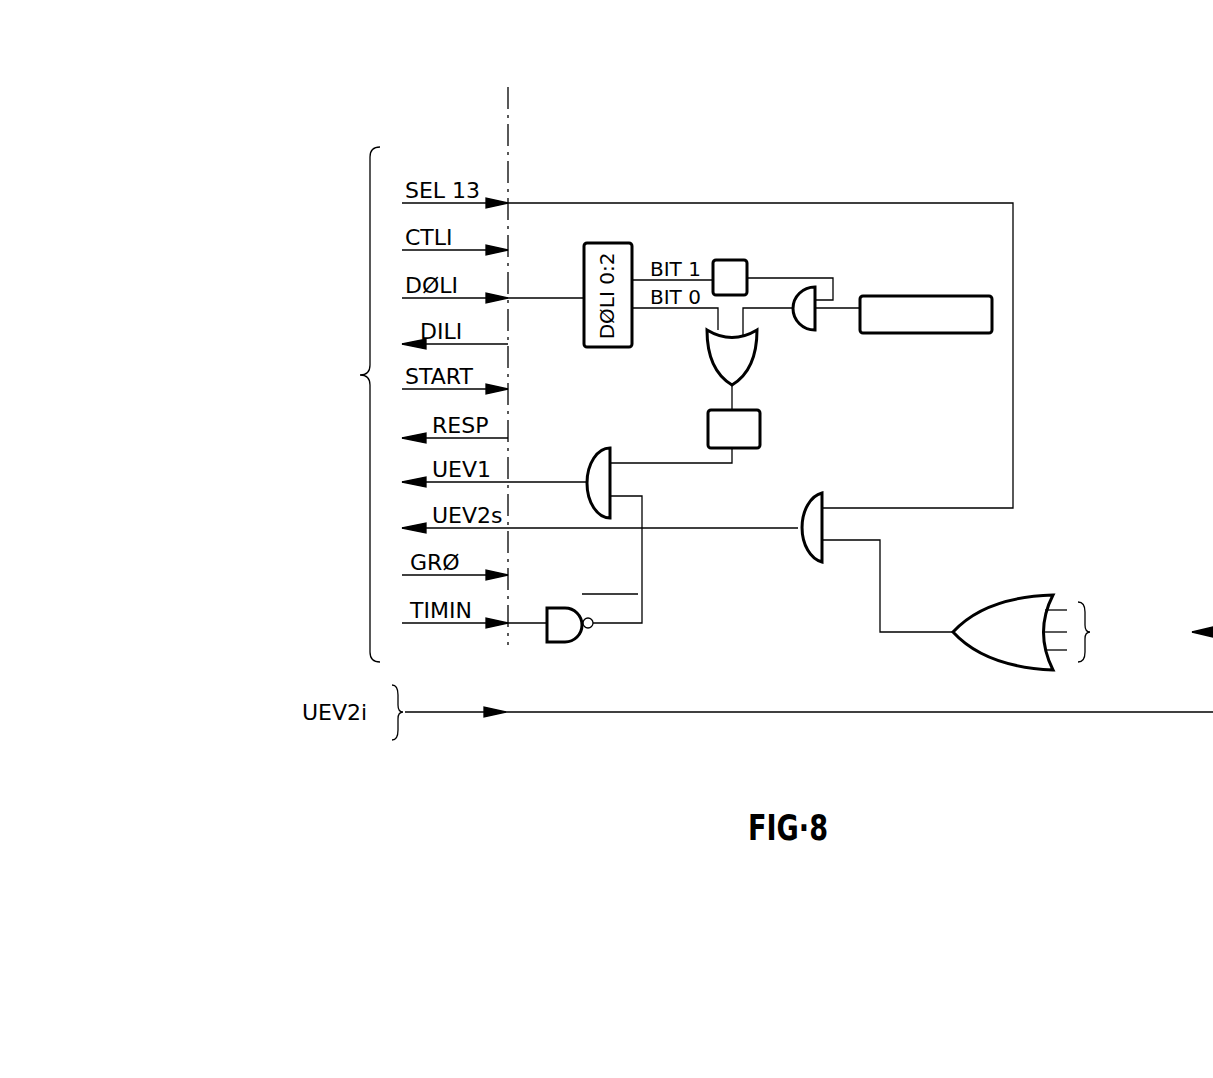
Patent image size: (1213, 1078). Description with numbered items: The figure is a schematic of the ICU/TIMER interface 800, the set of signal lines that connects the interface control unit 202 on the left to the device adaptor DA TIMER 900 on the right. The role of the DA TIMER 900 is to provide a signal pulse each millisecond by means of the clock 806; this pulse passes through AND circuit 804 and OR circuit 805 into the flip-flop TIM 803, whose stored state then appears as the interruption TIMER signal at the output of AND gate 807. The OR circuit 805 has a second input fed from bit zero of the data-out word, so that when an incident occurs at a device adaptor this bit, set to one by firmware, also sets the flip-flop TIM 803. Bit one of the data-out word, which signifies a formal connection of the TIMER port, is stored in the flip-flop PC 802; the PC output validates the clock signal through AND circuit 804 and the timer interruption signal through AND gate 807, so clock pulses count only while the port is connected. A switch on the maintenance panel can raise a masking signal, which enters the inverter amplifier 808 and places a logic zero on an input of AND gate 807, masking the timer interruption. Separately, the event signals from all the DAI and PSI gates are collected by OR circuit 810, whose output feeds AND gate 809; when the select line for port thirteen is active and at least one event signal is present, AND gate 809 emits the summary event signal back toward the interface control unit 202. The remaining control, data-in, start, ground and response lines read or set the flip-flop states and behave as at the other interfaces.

The ICU/TIMER interface 800 is at (553, 101).
The interface control unit 202 is at (311, 404).
The device adaptor DA TIMER 900 is at (760, 336).
The flip-flop PC 802 is at (730, 260).
The flip-flop TIM 803 is at (762, 418).
The AND circuit 804 is at (806, 331).
The OR circuit 805 is at (722, 354).
The clock 806 is at (882, 297).
The AND gate 807 is at (603, 463).
The inverter amplifier 808 is at (568, 646).
The AND gate 809 is at (806, 565).
The OR circuit 810 is at (1003, 676).